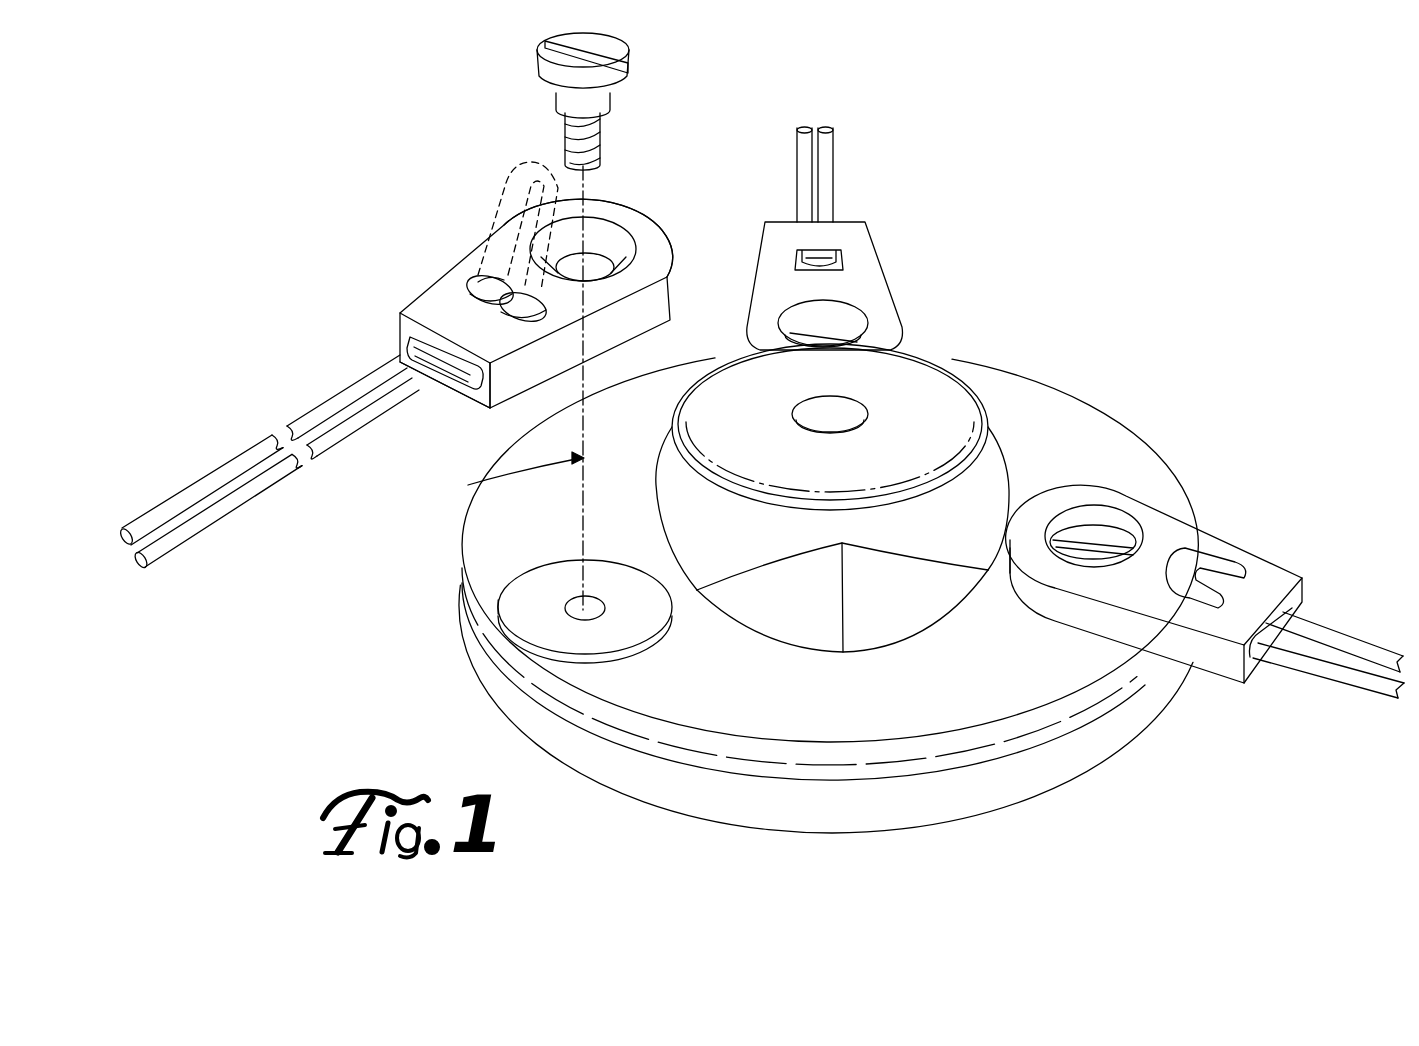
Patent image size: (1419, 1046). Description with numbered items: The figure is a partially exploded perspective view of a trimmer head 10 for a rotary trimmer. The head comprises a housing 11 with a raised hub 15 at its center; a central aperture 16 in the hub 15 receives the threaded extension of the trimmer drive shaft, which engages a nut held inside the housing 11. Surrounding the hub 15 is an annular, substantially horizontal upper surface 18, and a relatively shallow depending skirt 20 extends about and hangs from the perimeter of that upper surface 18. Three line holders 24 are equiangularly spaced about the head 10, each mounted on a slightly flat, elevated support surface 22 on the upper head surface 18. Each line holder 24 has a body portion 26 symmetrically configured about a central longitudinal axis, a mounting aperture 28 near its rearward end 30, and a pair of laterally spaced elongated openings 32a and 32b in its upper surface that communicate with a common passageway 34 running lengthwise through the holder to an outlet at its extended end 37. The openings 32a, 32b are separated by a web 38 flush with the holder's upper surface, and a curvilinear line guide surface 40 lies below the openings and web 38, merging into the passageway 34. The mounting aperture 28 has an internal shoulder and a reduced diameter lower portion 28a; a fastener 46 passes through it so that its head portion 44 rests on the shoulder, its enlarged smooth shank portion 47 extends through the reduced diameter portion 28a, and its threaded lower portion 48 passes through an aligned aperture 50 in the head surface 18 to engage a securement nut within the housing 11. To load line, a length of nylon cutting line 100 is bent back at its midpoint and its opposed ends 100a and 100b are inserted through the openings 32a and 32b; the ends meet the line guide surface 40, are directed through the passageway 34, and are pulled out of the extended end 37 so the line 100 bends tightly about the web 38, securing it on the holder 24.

The trimmer head 10 is at (1127, 272).
The housing 11 is at (1117, 422).
The raised hub 15 is at (985, 477).
The central aperture 16 is at (845, 407).
The upper surface 18 is at (1098, 465).
The depending skirt 20 is at (1147, 717).
The elevated support surface 22 is at (520, 574).
The line holder 24 is at (399, 333).
The body portion 26 is at (588, 340).
The mounting aperture 28 is at (606, 236).
The reduced diameter lower portion 28a is at (610, 272).
The rearward end 30 is at (670, 245).
The elongated opening 32a is at (483, 293).
The elongated opening 32b is at (510, 303).
The common passageway 34 is at (467, 381).
The extended end 37 is at (485, 397).
The web 38 is at (475, 291).
The line guide surface 40 is at (498, 283).
The head portion 44 is at (537, 61).
The fastener 46 is at (643, 67).
The smooth shank portion 47 is at (558, 101).
The lower portion 48 is at (576, 128).
The aperture 50 is at (575, 604).
The cutting line 100 is at (528, 195).
The extended end of line 100a is at (120, 532).
The extended end of line 100b is at (143, 568).